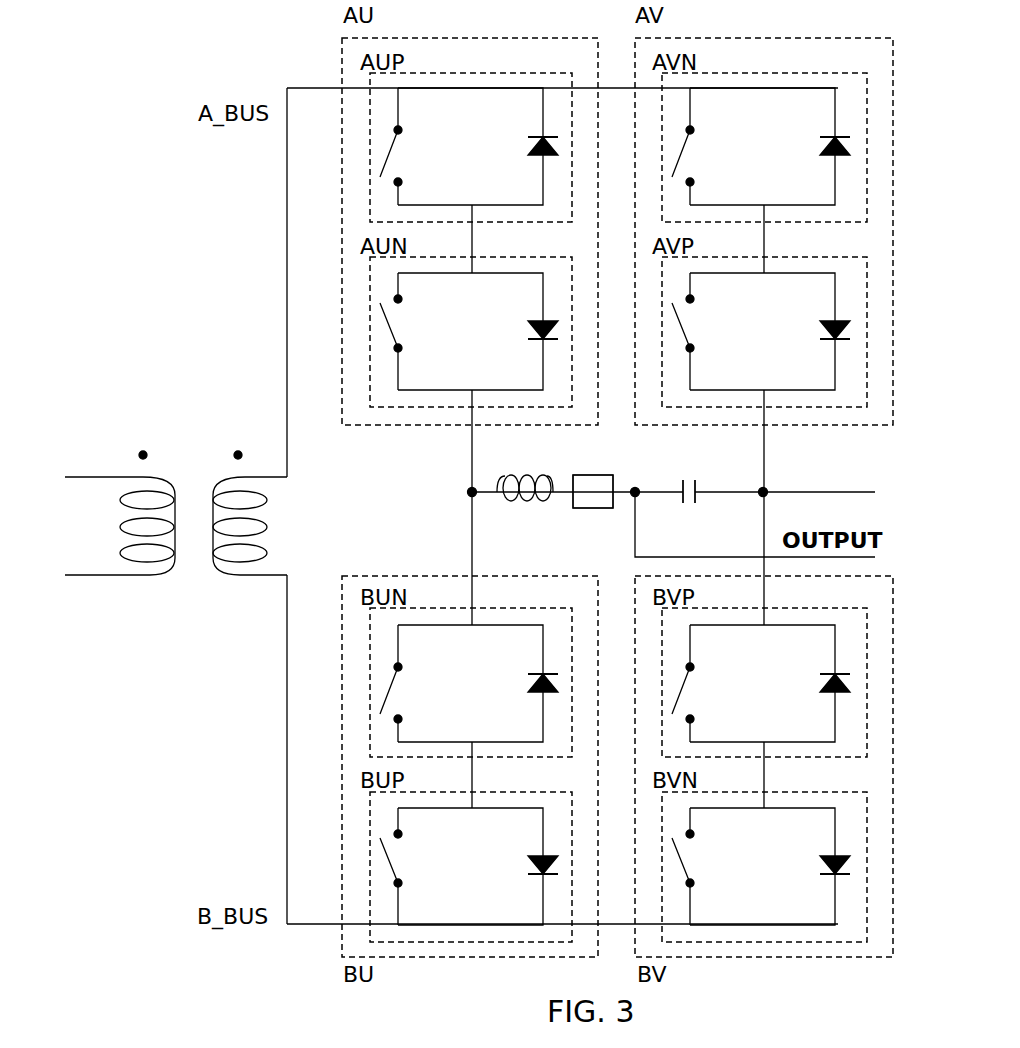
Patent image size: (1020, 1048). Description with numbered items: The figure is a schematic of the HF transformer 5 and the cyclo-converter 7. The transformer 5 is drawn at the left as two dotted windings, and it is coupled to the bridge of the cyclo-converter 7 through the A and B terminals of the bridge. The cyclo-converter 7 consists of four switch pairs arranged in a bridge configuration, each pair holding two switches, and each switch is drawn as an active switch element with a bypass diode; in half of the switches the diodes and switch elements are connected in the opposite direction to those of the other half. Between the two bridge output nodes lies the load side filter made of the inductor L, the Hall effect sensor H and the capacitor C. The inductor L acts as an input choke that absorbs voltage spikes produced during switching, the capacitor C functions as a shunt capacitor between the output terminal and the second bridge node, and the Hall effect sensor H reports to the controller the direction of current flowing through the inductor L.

The HF transformer 5 is at (193, 432).
The cyclo-converter 7 is at (537, 552).
The inductor L is at (528, 473).
The Hall effect sensor H is at (600, 474).
The capacitor C is at (690, 480).